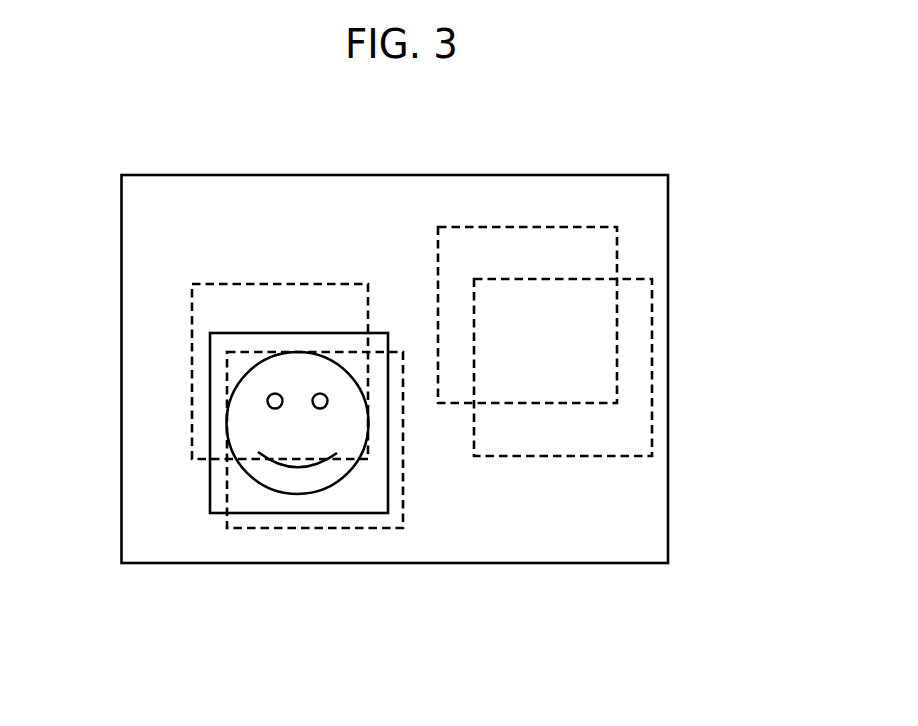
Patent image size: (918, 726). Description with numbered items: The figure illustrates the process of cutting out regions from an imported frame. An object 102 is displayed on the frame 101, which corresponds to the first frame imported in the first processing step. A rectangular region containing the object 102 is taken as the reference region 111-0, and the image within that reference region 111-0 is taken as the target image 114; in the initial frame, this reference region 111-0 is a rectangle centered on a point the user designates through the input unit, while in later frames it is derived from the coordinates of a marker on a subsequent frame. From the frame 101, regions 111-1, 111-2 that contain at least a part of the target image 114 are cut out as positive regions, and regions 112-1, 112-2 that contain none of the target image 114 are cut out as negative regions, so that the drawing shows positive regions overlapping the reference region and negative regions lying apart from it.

The frame 101 is at (668, 497).
The object 102 is at (250, 476).
The target image 114 is at (210, 397).
The reference region 111-0 is at (210, 360).
The region 111-1 is at (192, 311).
The region 111-2 is at (255, 529).
The region 112-1 is at (652, 409).
The region 112-2 is at (617, 258).